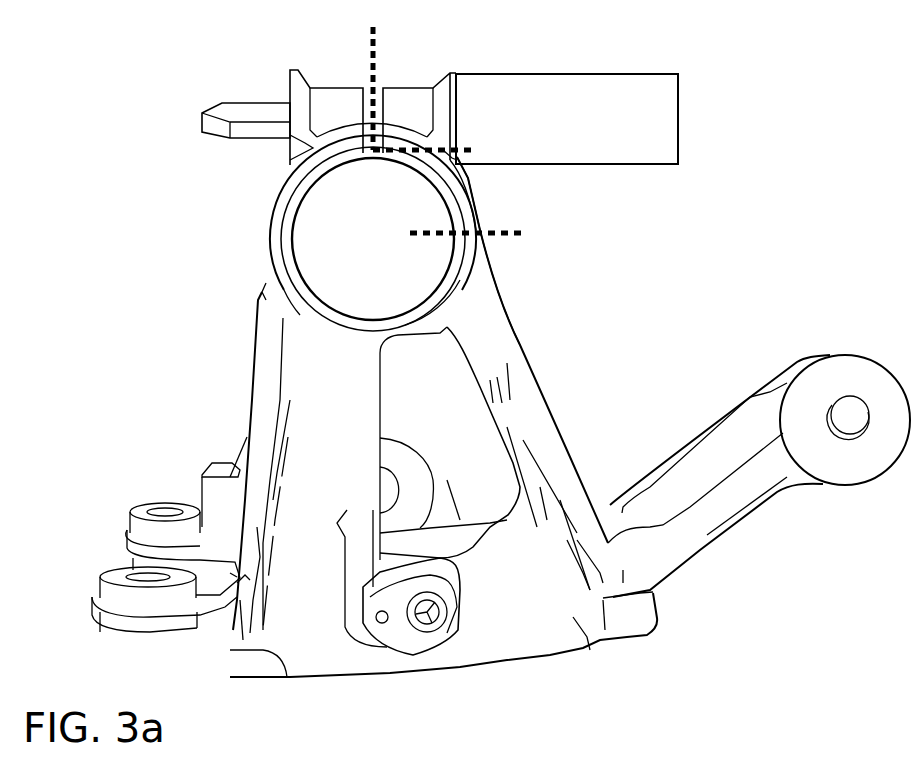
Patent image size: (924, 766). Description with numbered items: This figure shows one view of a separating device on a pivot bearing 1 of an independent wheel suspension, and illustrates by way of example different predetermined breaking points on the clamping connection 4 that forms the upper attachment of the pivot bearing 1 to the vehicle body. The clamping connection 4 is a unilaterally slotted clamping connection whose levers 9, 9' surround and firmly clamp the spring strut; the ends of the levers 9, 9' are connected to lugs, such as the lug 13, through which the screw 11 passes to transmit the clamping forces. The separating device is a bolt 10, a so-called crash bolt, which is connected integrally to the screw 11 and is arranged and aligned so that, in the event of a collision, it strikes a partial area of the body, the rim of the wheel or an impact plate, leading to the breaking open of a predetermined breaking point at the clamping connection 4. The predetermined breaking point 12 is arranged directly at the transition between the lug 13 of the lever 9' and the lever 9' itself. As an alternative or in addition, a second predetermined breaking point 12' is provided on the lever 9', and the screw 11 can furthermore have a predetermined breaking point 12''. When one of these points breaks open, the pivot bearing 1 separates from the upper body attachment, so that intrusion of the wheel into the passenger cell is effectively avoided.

The pivot bearing 1 is at (538, 407).
The clamping connection 4 is at (501, 267).
The lever 9 is at (332, 233).
The lever 9' is at (514, 193).
The bolt 10 is at (593, 88).
The screw 11 is at (238, 110).
The predetermined breaking point 12 is at (324, 197).
The second predetermined breaking point 12' is at (347, 293).
The predetermined breaking point 12'' is at (317, 78).
The lug 13 is at (414, 103).